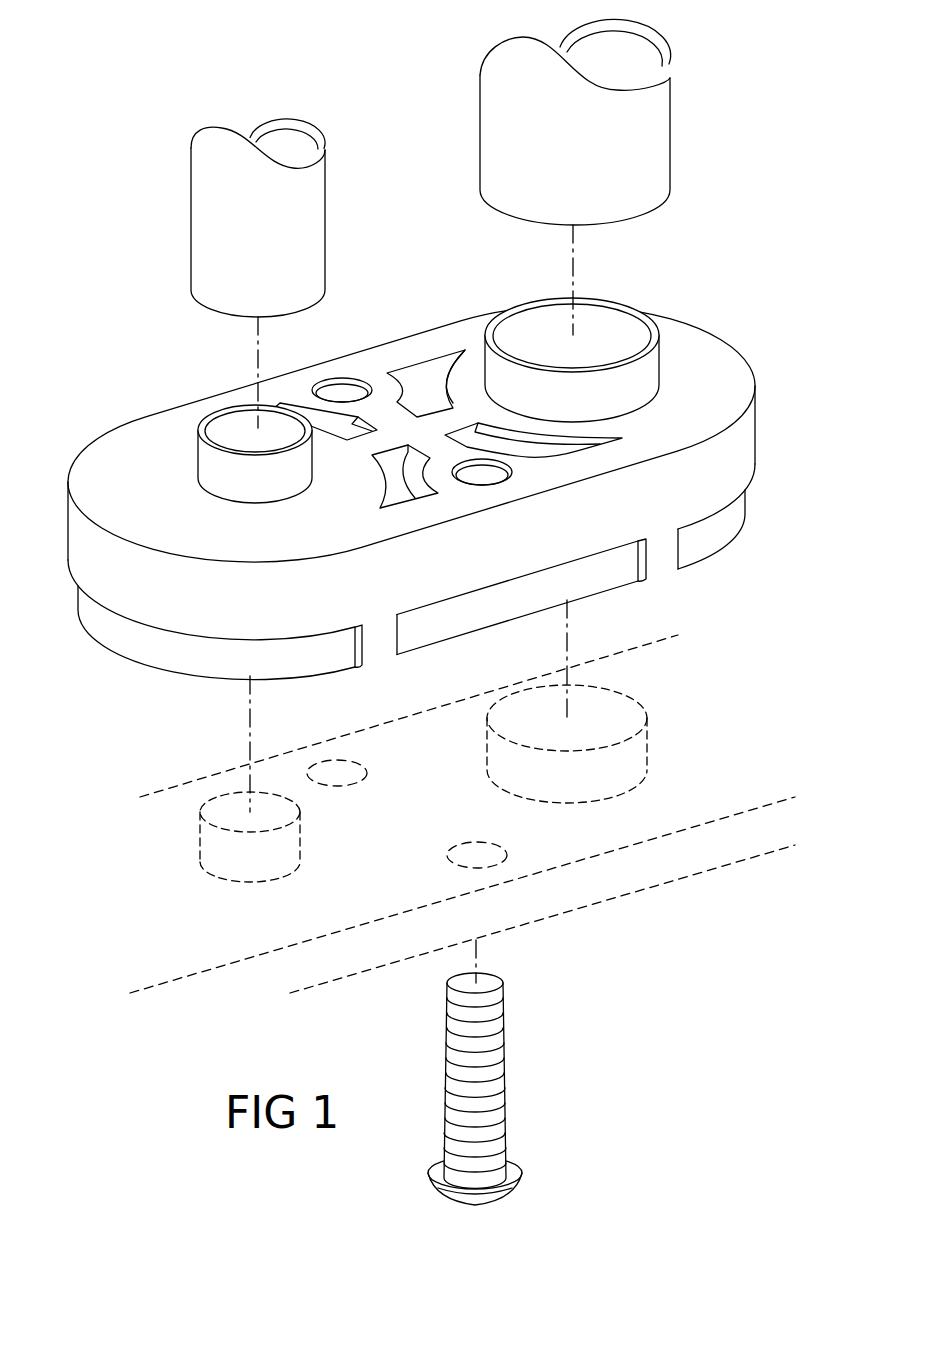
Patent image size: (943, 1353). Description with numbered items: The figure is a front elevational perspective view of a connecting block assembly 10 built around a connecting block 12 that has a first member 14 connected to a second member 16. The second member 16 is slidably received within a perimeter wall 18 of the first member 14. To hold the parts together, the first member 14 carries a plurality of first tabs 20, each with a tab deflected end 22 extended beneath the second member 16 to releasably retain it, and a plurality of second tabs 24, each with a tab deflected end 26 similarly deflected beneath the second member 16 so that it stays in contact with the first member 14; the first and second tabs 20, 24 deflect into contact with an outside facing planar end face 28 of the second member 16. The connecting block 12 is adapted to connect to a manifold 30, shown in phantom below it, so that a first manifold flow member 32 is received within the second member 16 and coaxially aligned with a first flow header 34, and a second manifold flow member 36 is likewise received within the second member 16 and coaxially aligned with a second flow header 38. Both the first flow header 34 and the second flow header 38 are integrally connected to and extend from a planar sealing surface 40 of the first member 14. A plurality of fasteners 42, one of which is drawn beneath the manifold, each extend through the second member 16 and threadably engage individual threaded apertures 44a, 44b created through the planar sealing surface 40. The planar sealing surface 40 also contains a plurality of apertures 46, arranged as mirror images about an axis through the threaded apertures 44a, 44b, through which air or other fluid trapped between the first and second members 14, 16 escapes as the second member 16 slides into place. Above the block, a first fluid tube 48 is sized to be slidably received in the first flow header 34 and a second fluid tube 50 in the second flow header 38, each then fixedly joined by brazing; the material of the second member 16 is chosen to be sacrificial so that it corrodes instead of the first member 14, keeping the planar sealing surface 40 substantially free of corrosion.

The connecting block assembly 10 is at (412, 612).
The connecting block 12 is at (412, 497).
The first member 14 is at (437, 466).
The second member 16 is at (411, 600).
The perimeter wall 18 is at (69, 557).
The first tabs 20 is at (376, 648).
The tab deflected end 22 is at (360, 670).
The second tabs 24 is at (665, 565).
The tab deflected end 26 is at (638, 585).
The outside facing planar end face 28 is at (497, 617).
The manifold 30 is at (586, 895).
The first manifold flow member 32 is at (198, 830).
The first flow header 34 is at (205, 453).
The second manifold flow member 36 is at (650, 740).
The second flow header 38 is at (652, 370).
The planar sealing surface 40 is at (128, 466).
The fasteners 42 is at (497, 1100).
The threaded aperture 44a is at (338, 388).
The threaded aperture 44b is at (500, 478).
The apertures 46 is at (425, 380).
The first fluid tube 48 is at (313, 247).
The second fluid tube 50 is at (492, 163).